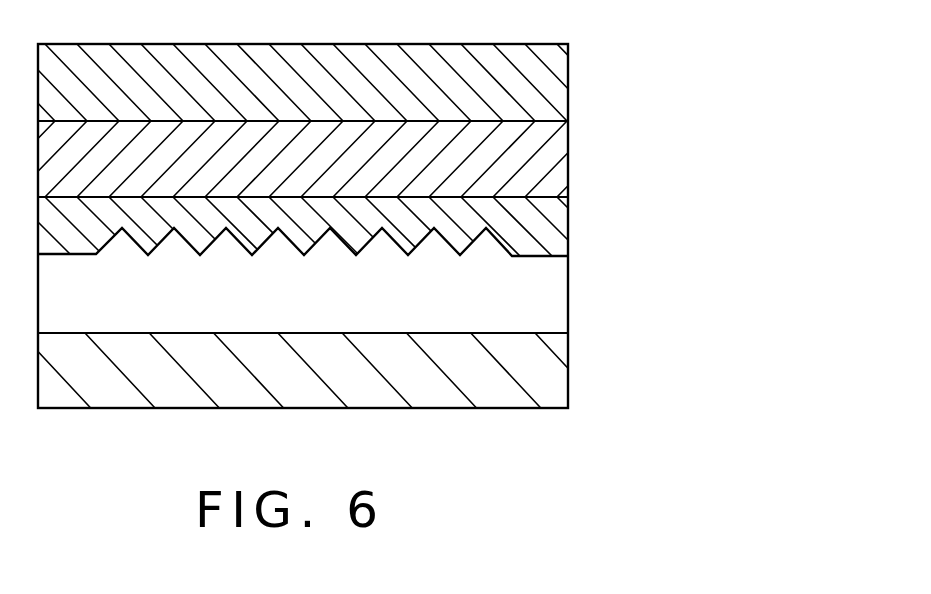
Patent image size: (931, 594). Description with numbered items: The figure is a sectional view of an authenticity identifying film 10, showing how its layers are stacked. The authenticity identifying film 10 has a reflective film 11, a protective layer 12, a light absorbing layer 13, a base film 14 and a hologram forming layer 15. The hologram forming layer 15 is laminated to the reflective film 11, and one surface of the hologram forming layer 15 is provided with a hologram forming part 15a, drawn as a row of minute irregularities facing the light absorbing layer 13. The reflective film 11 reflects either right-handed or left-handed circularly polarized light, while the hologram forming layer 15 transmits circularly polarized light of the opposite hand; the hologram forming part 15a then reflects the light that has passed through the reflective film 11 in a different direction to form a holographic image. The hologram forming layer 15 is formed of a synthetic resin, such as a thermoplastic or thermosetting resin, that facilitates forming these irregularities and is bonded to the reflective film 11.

The authenticity identifying film 10 is at (399, 232).
The reflective film 11 is at (562, 155).
The protective layer 12 is at (560, 75).
The light absorbing layer 13 is at (558, 306).
The base film 14 is at (350, 370).
The hologram forming layer 15 is at (563, 217).
The hologram forming part 15a is at (501, 243).